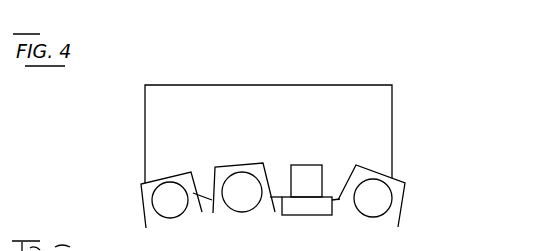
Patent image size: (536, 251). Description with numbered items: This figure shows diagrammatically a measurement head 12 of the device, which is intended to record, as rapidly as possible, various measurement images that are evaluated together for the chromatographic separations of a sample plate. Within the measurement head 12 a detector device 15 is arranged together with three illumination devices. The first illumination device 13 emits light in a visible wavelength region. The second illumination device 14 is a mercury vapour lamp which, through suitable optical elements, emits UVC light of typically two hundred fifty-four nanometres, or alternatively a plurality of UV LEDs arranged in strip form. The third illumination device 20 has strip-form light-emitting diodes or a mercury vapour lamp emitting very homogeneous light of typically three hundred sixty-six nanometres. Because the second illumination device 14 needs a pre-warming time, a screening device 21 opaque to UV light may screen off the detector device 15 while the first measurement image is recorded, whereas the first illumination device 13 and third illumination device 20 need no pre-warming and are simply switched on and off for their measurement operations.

The measurement head 12 is at (340, 99).
The first illumination device 13 is at (242, 185).
The second illumination device 14 is at (377, 193).
The detector device 15 is at (305, 180).
The third illumination device 20 is at (170, 198).
The screening device 21 is at (305, 205).